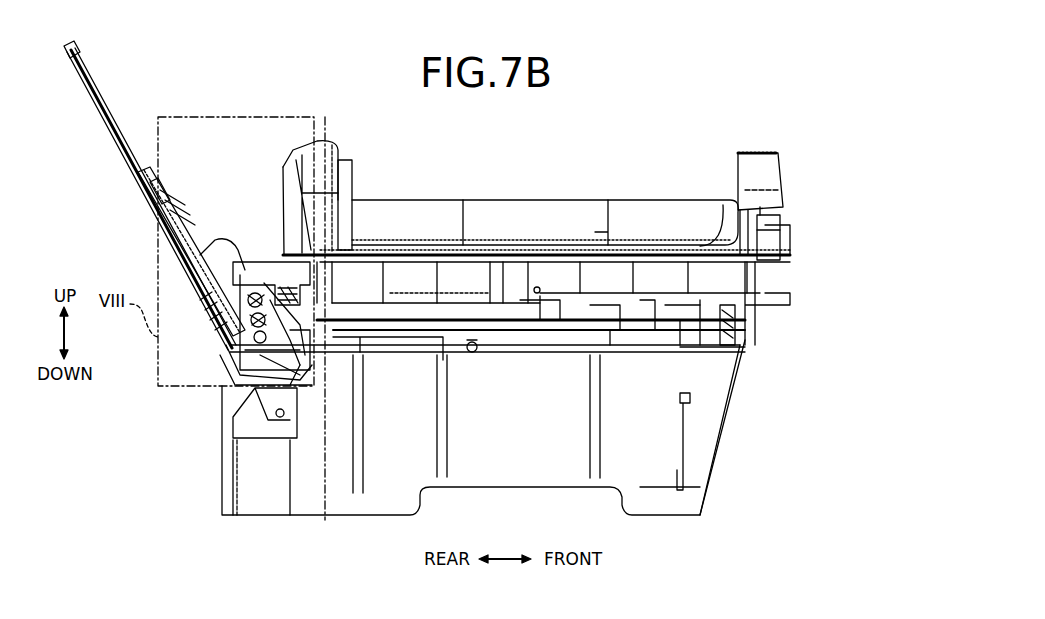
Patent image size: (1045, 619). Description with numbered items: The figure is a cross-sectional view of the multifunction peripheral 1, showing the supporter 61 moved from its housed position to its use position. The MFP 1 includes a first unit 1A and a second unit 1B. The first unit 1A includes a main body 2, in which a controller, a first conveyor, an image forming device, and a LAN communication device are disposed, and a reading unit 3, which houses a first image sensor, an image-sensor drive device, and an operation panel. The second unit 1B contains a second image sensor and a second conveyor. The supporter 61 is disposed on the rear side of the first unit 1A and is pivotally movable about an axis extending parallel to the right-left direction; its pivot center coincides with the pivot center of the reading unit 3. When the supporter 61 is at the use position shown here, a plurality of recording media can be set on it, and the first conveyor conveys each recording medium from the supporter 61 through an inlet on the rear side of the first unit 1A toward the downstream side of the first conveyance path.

The multifunction peripheral 1 is at (584, 167).
The first unit 1A is at (698, 463).
The second unit 1B is at (757, 154).
The main body 2 is at (713, 383).
The reading unit 3 is at (733, 283).
The supporter 61 is at (167, 198).